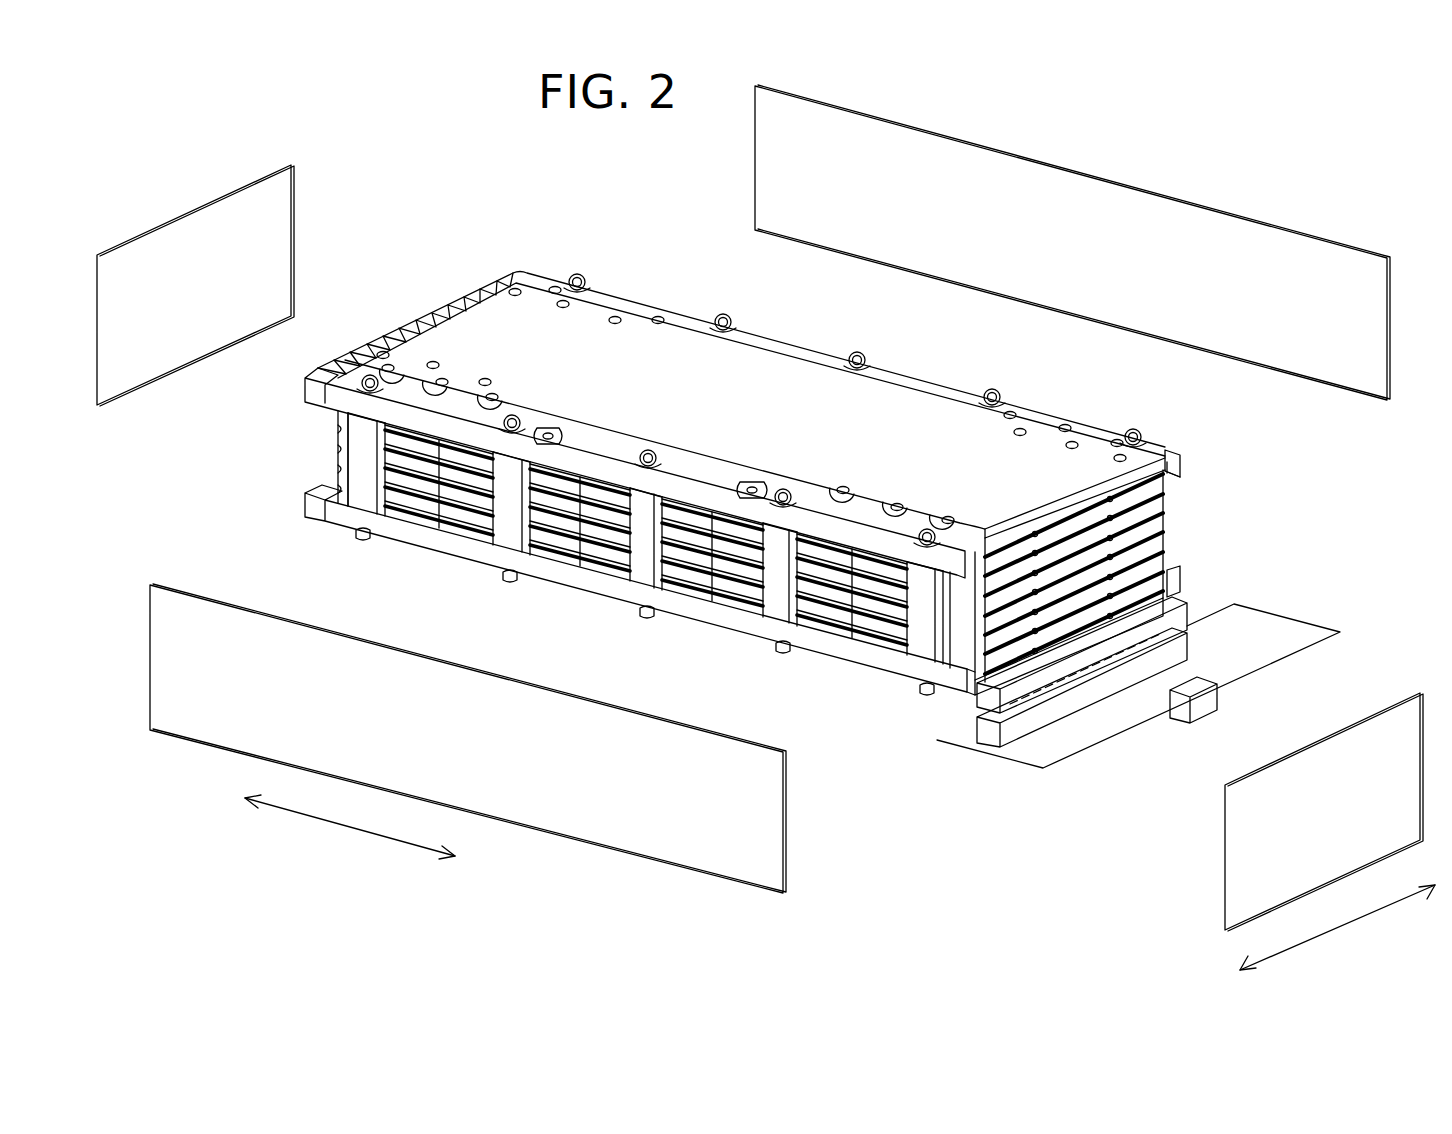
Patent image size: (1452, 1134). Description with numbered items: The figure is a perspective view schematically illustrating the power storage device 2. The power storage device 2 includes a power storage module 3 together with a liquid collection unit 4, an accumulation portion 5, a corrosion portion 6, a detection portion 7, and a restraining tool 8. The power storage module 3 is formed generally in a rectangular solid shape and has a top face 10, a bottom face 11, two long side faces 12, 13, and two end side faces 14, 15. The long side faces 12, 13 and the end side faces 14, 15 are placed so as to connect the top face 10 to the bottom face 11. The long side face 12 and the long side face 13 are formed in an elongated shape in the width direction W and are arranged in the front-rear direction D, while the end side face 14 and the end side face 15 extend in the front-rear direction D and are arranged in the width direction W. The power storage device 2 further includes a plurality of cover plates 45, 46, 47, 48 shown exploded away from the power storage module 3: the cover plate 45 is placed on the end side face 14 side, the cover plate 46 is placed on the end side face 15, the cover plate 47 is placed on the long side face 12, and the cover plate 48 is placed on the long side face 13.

The power storage device 2 is at (1272, 162).
The power storage module 3 is at (465, 248).
The liquid collection unit 4 is at (978, 703).
The accumulation portion 5 is at (1190, 630).
The corrosion portion 6 is at (1078, 687).
The detection portion 7 is at (1184, 715).
The restraining tool 8 is at (682, 340).
The top face 10 is at (1175, 474).
The bottom face 11 is at (1177, 593).
The long side face 12 is at (695, 570).
The long side face 13 is at (1167, 540).
The end side face 14 is at (1143, 527).
The end side face 15 is at (340, 443).
The cover plate 45 is at (1347, 727).
The cover plate 46 is at (173, 222).
The cover plate 47 is at (410, 652).
The cover plate 48 is at (1113, 178).